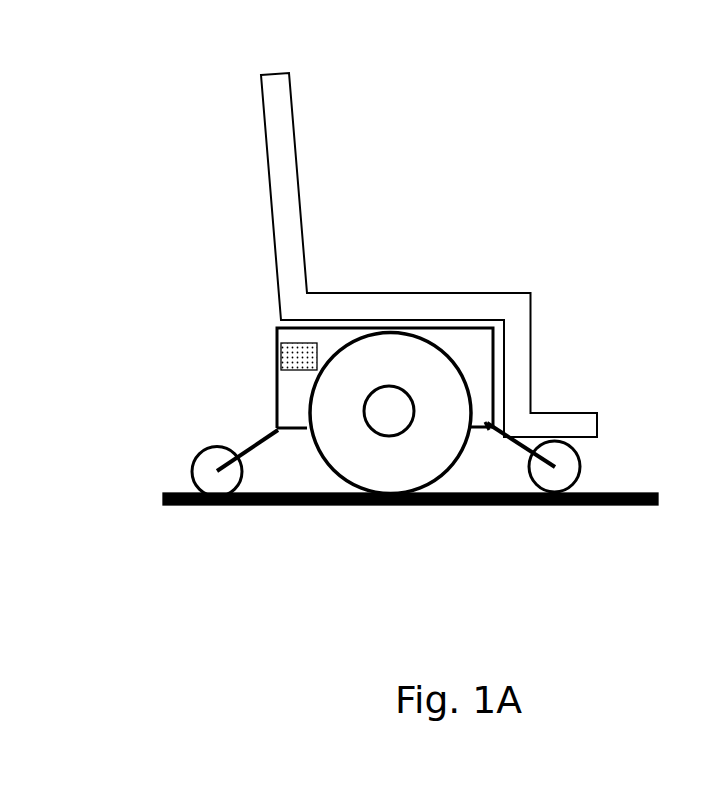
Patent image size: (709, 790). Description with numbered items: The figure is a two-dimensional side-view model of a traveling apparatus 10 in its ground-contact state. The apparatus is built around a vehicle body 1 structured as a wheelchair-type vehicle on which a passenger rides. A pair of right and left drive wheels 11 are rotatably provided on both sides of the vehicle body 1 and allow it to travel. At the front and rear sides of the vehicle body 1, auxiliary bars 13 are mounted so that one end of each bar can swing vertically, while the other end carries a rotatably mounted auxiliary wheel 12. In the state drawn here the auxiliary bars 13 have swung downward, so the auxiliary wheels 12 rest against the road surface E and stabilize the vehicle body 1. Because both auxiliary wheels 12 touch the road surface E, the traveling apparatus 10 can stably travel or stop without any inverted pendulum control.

The traveling apparatus 10 is at (390, 56).
The vehicle body 1 is at (482, 298).
The drive wheels 11 is at (403, 353).
The auxiliary wheels 12 is at (197, 457).
The auxiliary bars 13 is at (256, 438).
The road surface E is at (645, 490).